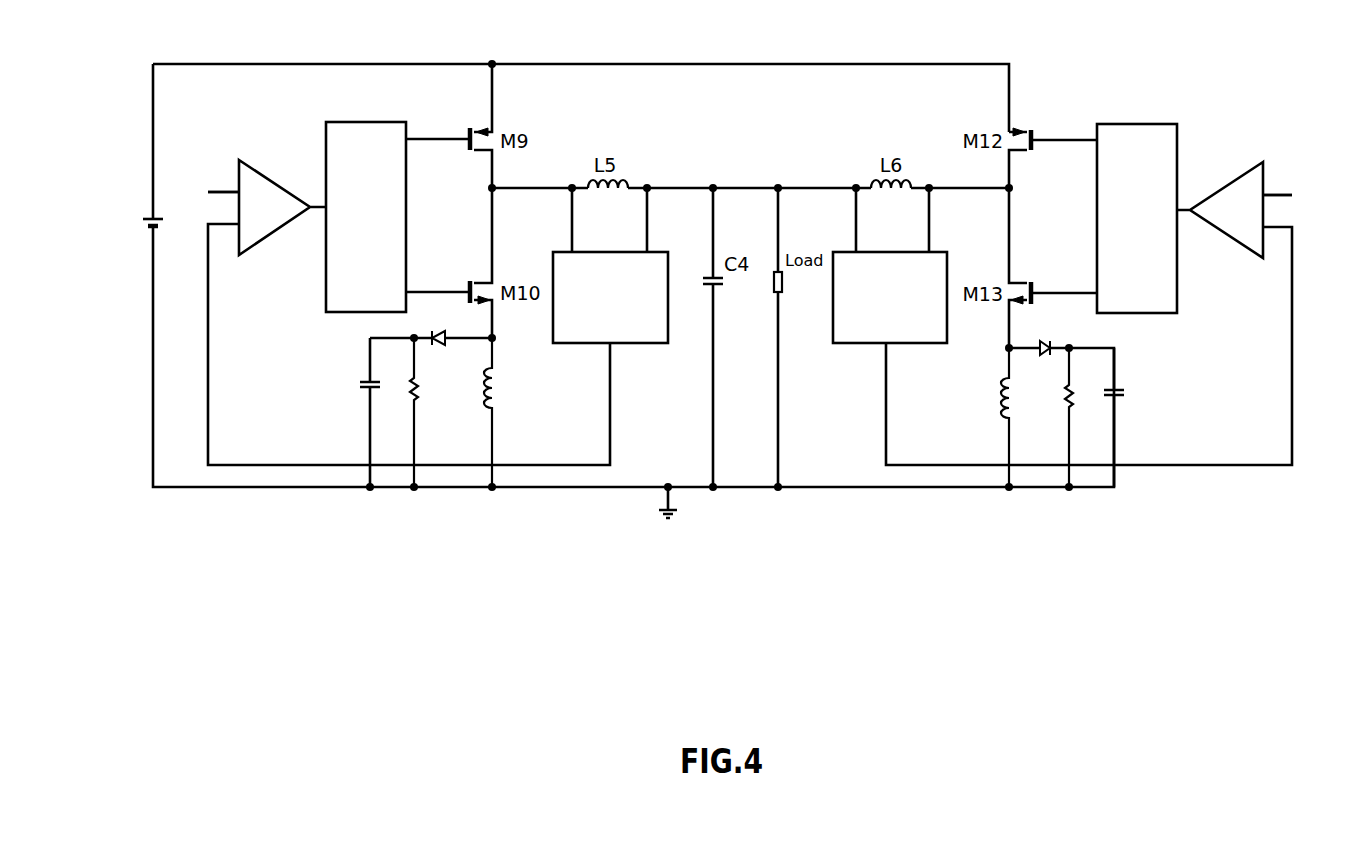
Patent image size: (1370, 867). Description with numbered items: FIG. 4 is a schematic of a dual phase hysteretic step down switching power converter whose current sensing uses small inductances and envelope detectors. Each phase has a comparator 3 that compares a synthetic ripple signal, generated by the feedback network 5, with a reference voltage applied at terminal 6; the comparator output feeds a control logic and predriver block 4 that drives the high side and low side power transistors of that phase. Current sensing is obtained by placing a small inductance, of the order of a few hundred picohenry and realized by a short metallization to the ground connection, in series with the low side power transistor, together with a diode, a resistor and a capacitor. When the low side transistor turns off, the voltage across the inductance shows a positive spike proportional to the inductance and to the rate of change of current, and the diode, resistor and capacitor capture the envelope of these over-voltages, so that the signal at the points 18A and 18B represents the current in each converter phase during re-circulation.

The comparator 3 is at (278, 231).
The control logic and predriver 4 is at (347, 122).
The feedback network 5 is at (590, 345).
The terminal 6 is at (225, 191).
The point 18A is at (370, 356).
The point 18B is at (1114, 356).